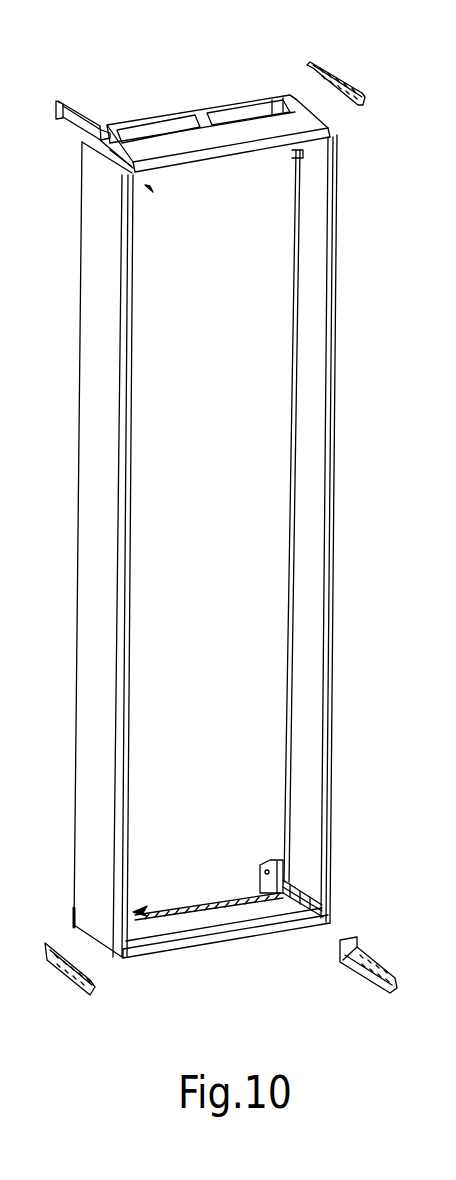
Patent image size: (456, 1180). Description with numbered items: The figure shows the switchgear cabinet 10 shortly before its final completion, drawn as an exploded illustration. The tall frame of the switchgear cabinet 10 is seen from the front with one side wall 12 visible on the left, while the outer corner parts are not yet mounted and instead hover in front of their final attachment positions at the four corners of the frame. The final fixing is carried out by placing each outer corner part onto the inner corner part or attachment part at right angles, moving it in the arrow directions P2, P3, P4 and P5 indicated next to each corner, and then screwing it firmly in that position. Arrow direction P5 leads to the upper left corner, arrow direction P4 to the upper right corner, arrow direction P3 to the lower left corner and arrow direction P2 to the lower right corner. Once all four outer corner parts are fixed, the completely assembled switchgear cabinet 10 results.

The switchgear cabinet 10 is at (57, 535).
The side wall 12 is at (455, 522).
The arrow direction P5 is at (91, 91).
The arrow direction P4 is at (388, 82).
The arrow direction P3 is at (108, 986).
The arrow direction P2 is at (339, 981).